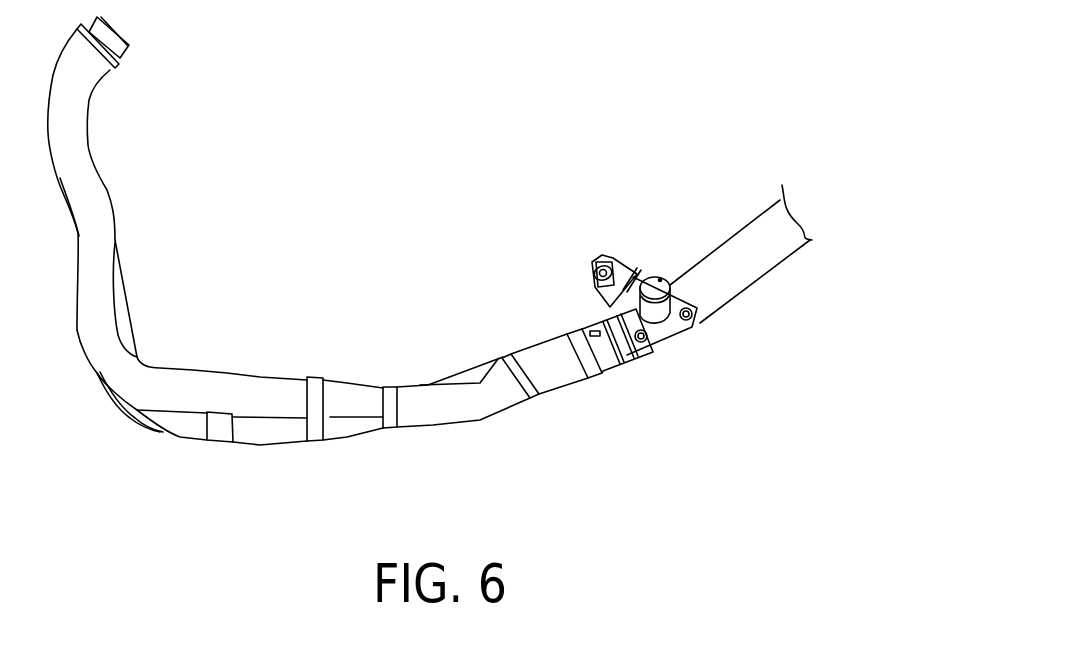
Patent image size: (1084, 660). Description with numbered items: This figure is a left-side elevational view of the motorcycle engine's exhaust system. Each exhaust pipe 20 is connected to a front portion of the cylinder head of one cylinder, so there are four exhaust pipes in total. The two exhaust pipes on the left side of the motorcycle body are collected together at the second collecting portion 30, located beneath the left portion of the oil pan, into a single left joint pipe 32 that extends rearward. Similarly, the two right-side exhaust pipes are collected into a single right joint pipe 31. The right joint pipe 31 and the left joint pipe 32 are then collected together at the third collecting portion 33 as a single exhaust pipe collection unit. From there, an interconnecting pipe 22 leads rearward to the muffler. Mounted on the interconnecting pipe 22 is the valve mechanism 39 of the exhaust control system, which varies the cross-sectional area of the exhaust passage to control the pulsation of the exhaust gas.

The exhaust pipe 20 is at (97, 212).
The interconnecting pipe 22 is at (735, 248).
The second collecting portion 30 is at (333, 432).
The right joint pipe 31 is at (480, 377).
The left joint pipe 32 is at (444, 413).
The third collecting portion 33 is at (562, 382).
The valve mechanism 39 is at (658, 330).